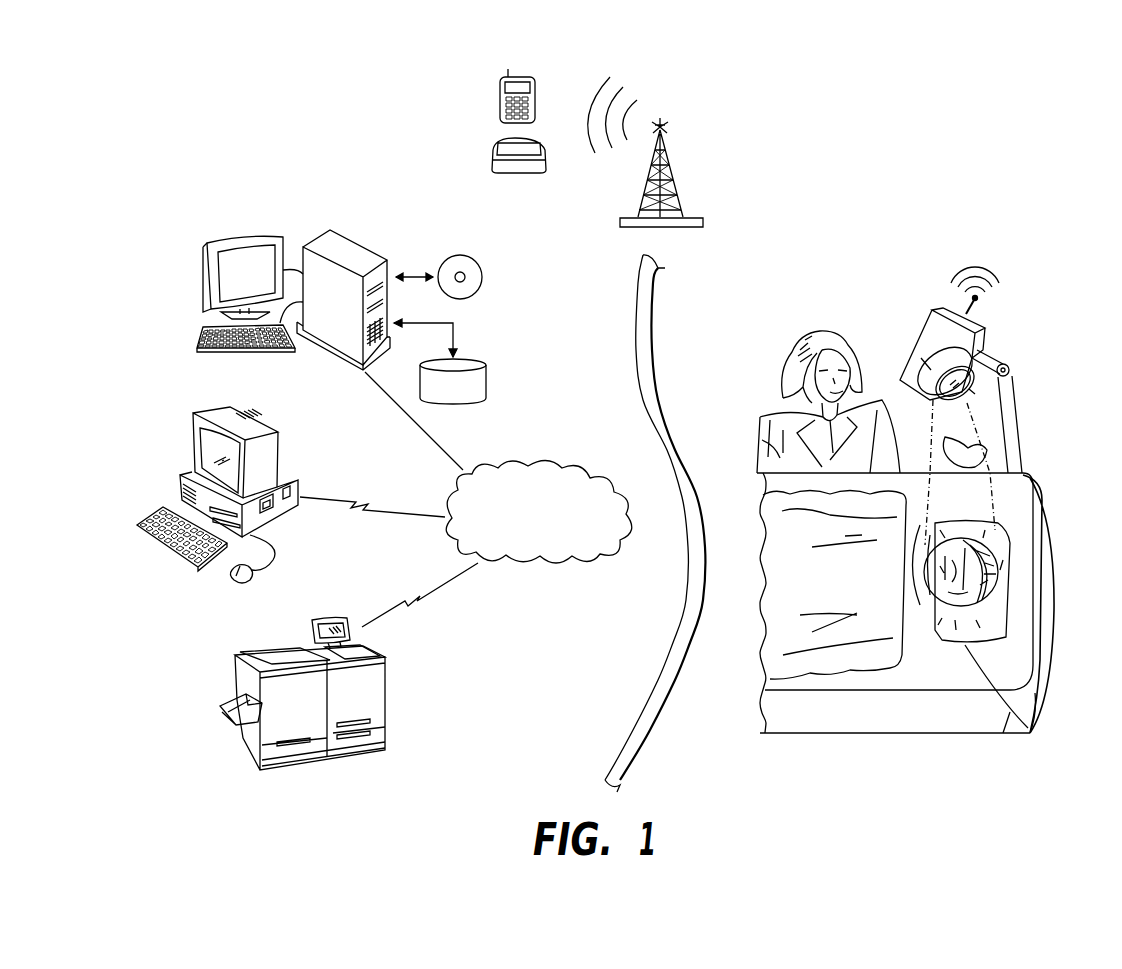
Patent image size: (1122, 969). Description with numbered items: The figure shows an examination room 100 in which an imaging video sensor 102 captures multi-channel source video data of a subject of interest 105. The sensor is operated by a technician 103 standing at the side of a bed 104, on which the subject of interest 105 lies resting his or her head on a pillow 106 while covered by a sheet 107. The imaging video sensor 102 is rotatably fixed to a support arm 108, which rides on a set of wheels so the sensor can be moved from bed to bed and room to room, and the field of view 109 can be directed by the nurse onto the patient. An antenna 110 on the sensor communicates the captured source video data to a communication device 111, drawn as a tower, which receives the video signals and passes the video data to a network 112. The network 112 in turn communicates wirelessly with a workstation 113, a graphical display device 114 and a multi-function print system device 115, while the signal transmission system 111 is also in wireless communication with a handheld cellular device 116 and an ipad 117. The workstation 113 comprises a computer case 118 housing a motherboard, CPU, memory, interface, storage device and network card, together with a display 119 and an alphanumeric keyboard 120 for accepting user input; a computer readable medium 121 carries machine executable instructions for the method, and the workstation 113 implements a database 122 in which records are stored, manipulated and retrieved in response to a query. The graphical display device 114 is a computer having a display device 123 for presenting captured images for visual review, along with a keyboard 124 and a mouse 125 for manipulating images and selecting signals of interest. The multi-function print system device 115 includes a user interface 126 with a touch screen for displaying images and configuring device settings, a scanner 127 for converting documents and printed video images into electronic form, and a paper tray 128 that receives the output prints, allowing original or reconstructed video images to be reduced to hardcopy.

The examination room 100 is at (1035, 246).
The imaging video sensor 102 is at (966, 337).
The technician 103 is at (818, 332).
The bed 104 is at (929, 603).
The subject of interest 105 is at (998, 573).
The pillow 106 is at (1020, 710).
The sheet 107 is at (766, 658).
The support arm 108 is at (1017, 391).
The field of view 109 is at (985, 463).
The antenna 110 is at (966, 304).
The communication device 111 is at (673, 179).
The network 112 is at (543, 565).
The workstation 113 is at (237, 219).
The graphical display device 114 is at (284, 451).
The multi-function print system device 115 is at (295, 632).
The handheld cellular device 116 is at (500, 97).
The ipad 117 is at (492, 153).
The computer case 118 is at (354, 242).
The display 119 is at (205, 282).
The alphanumeric keyboard 120 is at (195, 337).
The computer readable medium 121 is at (458, 255).
The database 122 is at (468, 358).
The display device 123 is at (202, 452).
The keyboard 124 is at (160, 545).
The mouse 125 is at (233, 579).
The user interface 126 is at (328, 620).
The scanner 127 is at (248, 651).
The paper tray 128 is at (221, 710).